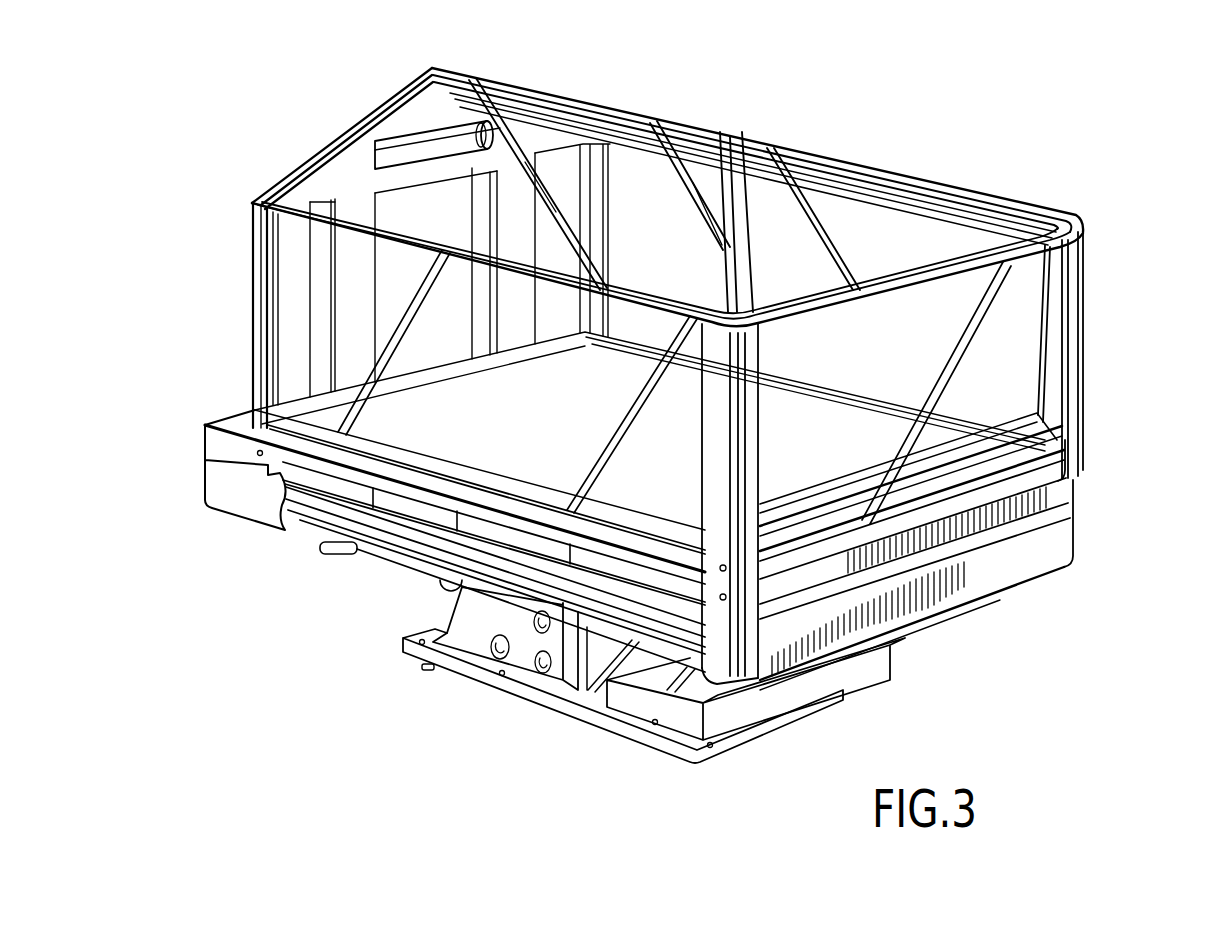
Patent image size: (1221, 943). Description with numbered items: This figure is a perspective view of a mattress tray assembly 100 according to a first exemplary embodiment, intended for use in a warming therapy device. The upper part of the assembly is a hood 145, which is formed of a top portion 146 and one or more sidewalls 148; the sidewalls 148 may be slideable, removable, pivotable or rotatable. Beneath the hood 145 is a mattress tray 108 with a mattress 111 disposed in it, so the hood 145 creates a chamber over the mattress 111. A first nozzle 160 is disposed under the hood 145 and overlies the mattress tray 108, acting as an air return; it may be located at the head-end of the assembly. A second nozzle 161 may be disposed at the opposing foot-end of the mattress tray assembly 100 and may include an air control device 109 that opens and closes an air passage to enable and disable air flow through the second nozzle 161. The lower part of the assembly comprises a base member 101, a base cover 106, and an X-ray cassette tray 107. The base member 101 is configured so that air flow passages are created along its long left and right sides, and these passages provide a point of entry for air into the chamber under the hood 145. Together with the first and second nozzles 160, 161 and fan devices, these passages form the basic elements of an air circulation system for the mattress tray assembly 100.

The mattress tray assembly 100 is at (990, 140).
The base member 101 is at (924, 600).
The base cover 106 is at (998, 523).
The X-ray cassette tray 107 is at (358, 488).
The mattress tray 108 is at (300, 437).
The air control device 109 is at (980, 458).
The mattress 111 is at (547, 418).
The hood 145 is at (745, 112).
The top portion 146 is at (633, 212).
The sidewalls 148 is at (428, 300).
The first nozzle 160 is at (405, 122).
The second nozzle 161 is at (832, 462).